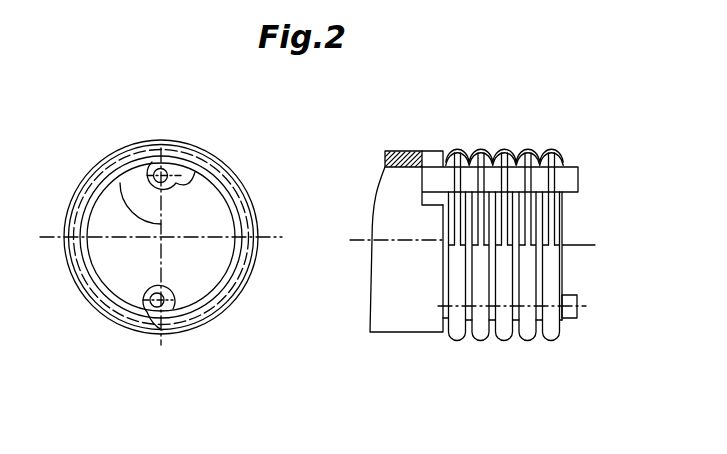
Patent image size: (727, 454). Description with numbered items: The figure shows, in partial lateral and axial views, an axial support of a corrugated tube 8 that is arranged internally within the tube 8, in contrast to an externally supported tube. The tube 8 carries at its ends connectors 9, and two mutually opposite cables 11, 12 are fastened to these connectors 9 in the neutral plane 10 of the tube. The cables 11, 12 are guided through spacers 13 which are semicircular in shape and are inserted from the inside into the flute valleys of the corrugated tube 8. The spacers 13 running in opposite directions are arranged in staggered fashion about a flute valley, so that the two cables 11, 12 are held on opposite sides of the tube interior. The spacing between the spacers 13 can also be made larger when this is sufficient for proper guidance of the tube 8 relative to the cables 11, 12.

The tube 8 is at (550, 276).
The connectors 9 is at (393, 313).
The neutral plane 10 is at (102, 153).
The cable 11 is at (160, 331).
The cable 12 is at (195, 178).
The spacers 13 is at (240, 182).